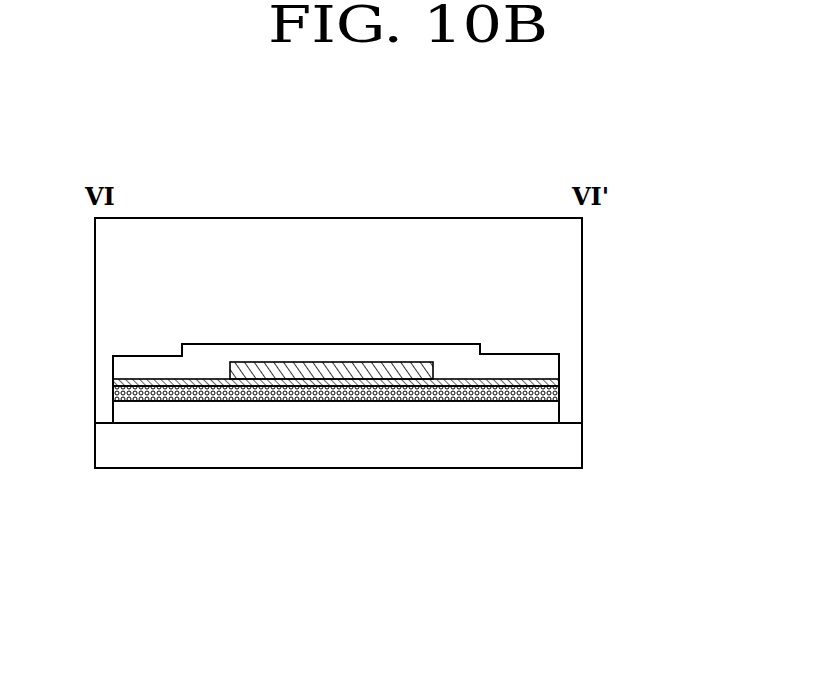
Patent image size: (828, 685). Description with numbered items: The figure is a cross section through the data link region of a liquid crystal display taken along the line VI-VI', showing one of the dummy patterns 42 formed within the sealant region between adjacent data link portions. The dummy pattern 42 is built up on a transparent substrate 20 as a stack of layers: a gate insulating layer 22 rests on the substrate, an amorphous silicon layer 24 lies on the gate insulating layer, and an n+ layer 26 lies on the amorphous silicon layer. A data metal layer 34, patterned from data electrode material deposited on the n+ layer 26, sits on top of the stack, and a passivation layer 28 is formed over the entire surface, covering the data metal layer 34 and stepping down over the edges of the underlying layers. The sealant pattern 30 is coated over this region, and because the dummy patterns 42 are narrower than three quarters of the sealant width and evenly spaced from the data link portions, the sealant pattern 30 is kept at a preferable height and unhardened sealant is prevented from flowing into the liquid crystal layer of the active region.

The transparent substrate 20 is at (568, 448).
The gate insulating layer 22 is at (552, 410).
The amorphous silicon layer 24 is at (557, 390).
The n+ layer 26 is at (558, 374).
The passivation layer 28 is at (545, 359).
The sealant pattern 30 is at (572, 260).
The data metal layer 34 is at (280, 380).
The dummy pattern 42 is at (273, 333).